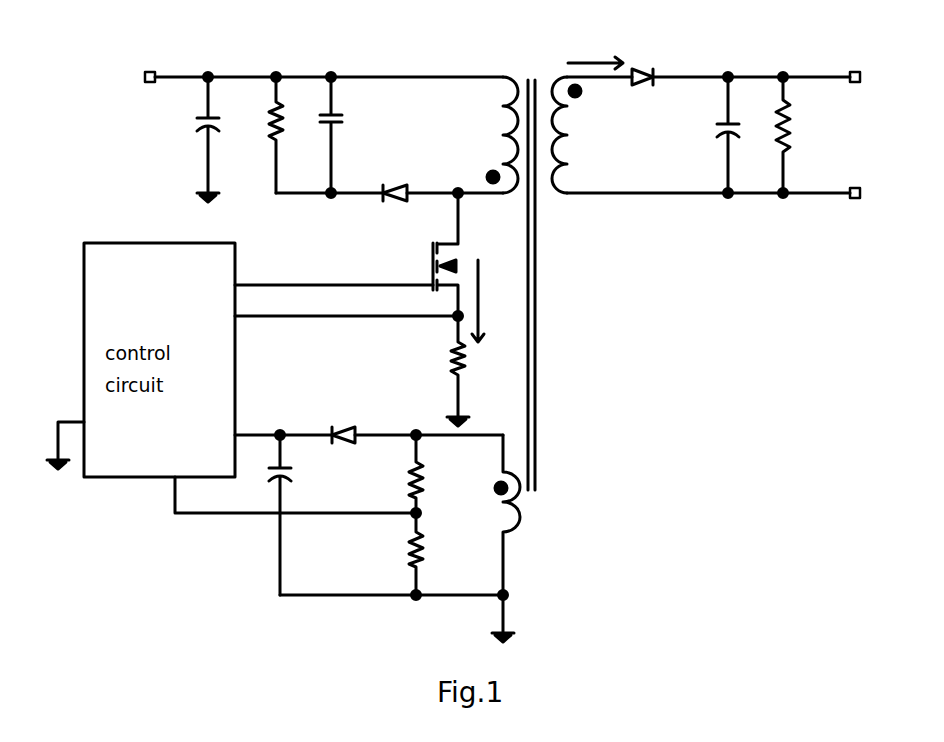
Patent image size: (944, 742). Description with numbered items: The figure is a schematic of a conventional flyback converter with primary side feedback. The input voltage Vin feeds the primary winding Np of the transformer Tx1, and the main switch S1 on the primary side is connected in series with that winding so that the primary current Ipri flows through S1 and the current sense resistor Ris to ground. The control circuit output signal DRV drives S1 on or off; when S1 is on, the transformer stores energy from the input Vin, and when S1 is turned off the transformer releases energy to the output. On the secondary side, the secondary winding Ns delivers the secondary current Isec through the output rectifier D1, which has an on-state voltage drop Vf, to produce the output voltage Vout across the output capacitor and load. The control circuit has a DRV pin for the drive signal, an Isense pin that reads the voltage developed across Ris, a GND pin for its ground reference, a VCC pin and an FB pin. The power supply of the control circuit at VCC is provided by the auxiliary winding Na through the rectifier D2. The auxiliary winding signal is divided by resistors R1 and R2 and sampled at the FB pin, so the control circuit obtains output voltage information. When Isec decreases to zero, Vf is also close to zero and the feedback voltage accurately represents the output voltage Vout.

The input voltage Vin is at (315, 61).
The transformer Tx1 is at (534, 313).
The primary winding Np is at (486, 135).
The secondary winding Ns is at (582, 135).
The auxiliary winding Na is at (487, 515).
The secondary current Isec is at (595, 52).
The output rectifier D1 is at (645, 60).
The on-state voltage drop Vf is at (654, 106).
The output voltage Vout is at (854, 135).
The main switch S1 is at (421, 254).
The primary current Ipri is at (492, 301).
The current sense resistor Ris is at (443, 369).
The control circuit output signal DRV is at (308, 286).
The current sense pin Isense is at (309, 318).
The ground pin GND is at (92, 440).
The supply pin VCC is at (344, 436).
The feedback pin FB is at (289, 482).
The rectifier D2 is at (346, 452).
The feedback divider resistor R1 is at (401, 476).
The feedback divider resistor R2 is at (401, 556).